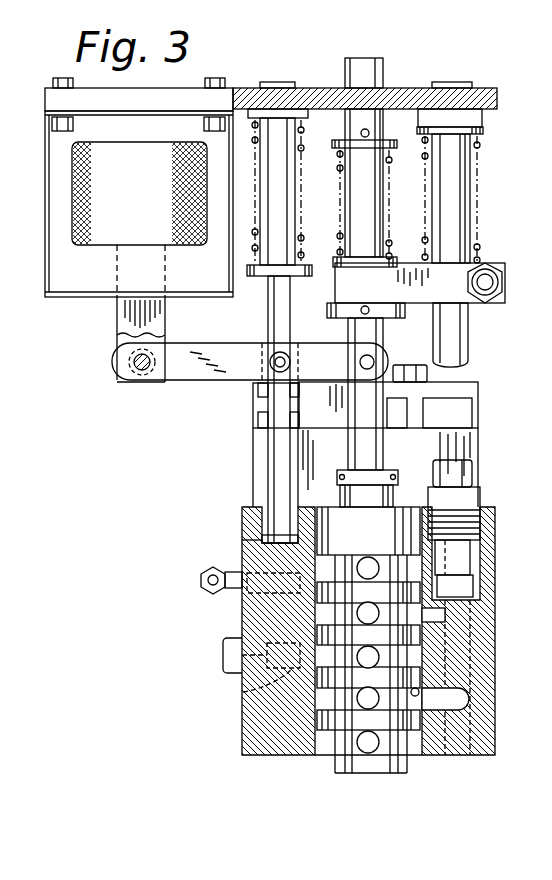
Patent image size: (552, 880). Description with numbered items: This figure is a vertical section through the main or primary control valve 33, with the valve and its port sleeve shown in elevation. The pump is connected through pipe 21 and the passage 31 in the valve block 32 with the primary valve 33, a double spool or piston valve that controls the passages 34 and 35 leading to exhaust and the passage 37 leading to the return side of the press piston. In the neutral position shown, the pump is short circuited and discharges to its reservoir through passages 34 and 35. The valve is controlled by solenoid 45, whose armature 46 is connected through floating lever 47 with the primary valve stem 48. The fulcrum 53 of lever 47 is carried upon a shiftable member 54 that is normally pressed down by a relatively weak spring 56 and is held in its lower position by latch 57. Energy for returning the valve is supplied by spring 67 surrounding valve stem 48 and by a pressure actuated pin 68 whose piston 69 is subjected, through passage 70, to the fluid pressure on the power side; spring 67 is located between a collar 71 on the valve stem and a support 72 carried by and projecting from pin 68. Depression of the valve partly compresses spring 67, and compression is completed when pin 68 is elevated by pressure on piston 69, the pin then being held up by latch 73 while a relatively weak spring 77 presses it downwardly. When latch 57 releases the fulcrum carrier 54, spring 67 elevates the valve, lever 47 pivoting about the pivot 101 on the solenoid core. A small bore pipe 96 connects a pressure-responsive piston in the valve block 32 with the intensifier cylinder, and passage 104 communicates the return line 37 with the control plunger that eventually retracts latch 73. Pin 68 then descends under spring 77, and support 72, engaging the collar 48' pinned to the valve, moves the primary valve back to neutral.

The pipe 21 is at (226, 656).
The passage 31 is at (246, 696).
The valve block 32 is at (246, 612).
The main or primary valve 33 is at (366, 60).
The passage 34 is at (470, 630).
The passage 35 is at (364, 748).
The passage 37 is at (466, 703).
The solenoid 45 is at (58, 148).
The armature 46 is at (125, 322).
The floating lever 47 is at (190, 352).
The primary valve stem 48 is at (375, 352).
The collar 48' is at (373, 331).
The fulcrum 53 is at (272, 358).
The shiftable member 54 is at (288, 84).
The spring 56 is at (303, 149).
The latch 57 is at (262, 412).
The spring 67 is at (390, 160).
The pressure actuated pin 68 is at (450, 82).
The piston 69 is at (472, 586).
The passage 70 is at (445, 616).
The collar 71 is at (345, 140).
The support 72 is at (493, 262).
The latch 73 is at (472, 412).
The spring 77 is at (480, 146).
The small bore pipe 96 is at (213, 570).
The pivot 101 is at (142, 370).
The passage 104 is at (420, 692).